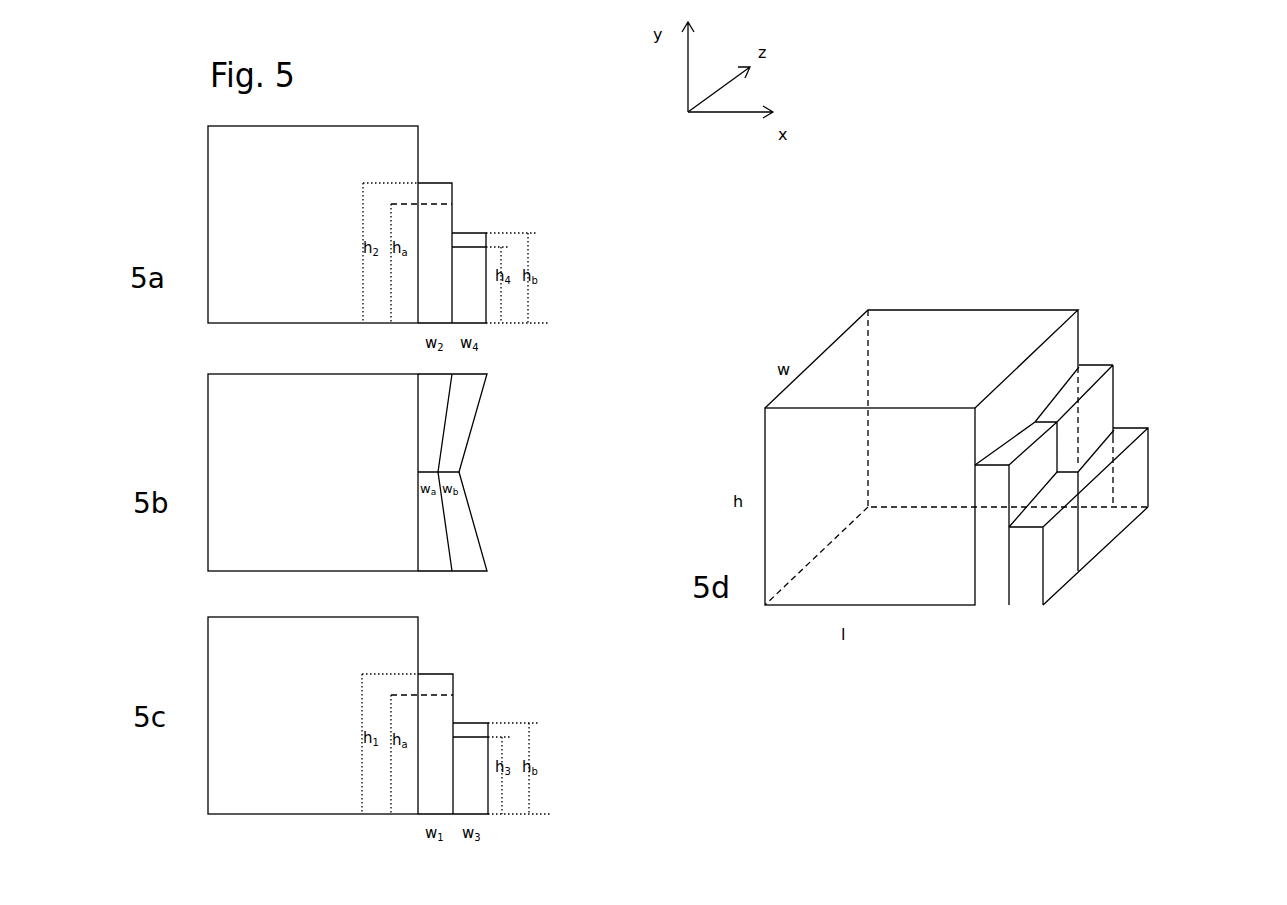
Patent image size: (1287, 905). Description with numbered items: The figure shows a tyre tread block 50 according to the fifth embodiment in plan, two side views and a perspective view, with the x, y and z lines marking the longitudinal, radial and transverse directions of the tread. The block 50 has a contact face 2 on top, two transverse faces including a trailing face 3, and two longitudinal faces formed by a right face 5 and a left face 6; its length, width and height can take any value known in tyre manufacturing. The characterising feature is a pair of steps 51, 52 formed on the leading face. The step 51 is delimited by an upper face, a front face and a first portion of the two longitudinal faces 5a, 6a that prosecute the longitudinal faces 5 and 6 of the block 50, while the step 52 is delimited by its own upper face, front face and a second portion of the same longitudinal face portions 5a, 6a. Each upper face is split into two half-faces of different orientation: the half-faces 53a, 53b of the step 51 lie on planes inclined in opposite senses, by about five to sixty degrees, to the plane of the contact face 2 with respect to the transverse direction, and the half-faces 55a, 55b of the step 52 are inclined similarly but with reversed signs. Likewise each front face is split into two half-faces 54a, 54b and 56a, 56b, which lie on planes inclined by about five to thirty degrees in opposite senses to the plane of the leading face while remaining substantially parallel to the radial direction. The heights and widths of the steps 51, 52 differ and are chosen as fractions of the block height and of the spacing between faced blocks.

The contact face 2 is at (822, 373).
The trailing face 3 is at (803, 463).
The right face 5 is at (967, 352).
The first portion of longitudinal face 5a is at (437, 262).
The left face 6 is at (892, 535).
The first portion of longitudinal face 6a is at (466, 780).
The block 50 is at (1043, 253).
The step 51 is at (1100, 358).
The step 52 is at (1158, 455).
The half-face 53a is at (432, 557).
The half-face 53b is at (424, 431).
The half-face 54a is at (1030, 478).
The half-face 54b is at (1100, 416).
The half-face 55a is at (452, 507).
The half-face 55b is at (459, 444).
The half-face 56a is at (1057, 528).
The half-face 56b is at (1100, 521).